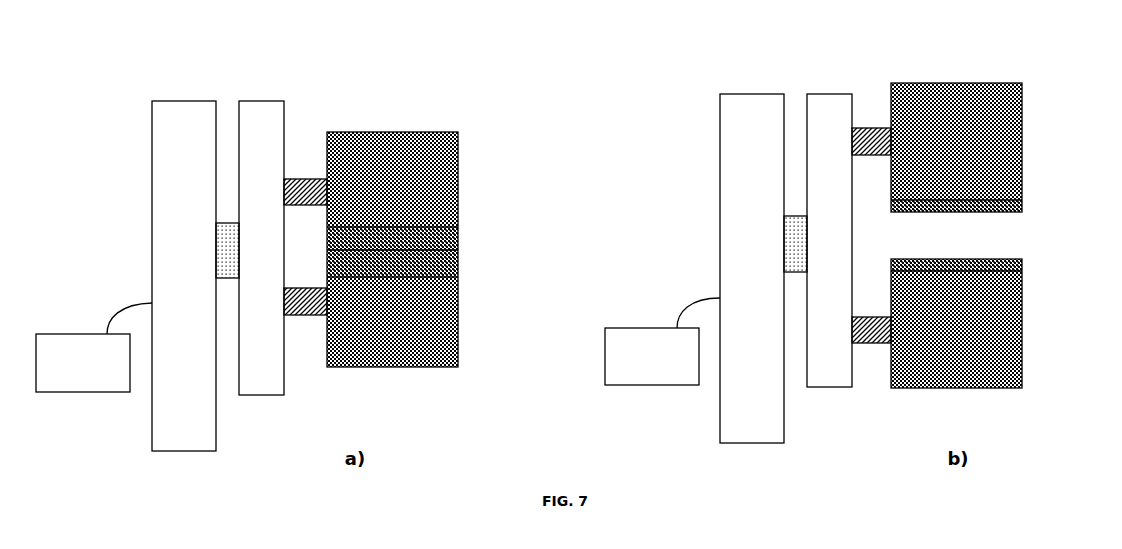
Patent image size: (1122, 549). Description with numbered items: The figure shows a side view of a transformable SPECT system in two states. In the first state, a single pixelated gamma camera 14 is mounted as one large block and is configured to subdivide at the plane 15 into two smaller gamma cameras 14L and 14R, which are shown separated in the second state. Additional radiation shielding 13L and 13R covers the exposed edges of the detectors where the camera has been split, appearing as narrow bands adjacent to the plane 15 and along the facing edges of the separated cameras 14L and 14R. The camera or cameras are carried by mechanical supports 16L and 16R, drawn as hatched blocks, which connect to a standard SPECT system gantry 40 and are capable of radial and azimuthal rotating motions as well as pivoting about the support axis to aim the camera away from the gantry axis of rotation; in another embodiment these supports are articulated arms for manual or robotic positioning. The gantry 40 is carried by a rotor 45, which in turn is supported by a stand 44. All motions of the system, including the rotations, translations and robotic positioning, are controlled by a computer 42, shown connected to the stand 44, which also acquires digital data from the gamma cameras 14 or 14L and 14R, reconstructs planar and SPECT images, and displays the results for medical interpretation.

The stand 44 is at (178, 120).
The gantry 40 is at (262, 118).
The rotor 45 is at (220, 225).
The computer 42 is at (66, 343).
The mechanical support 16L is at (299, 178).
The mechanical support 16R is at (303, 317).
The pixelated gamma camera 14 is at (436, 321).
The smaller gamma camera 14L is at (1003, 125).
The smaller gamma camera 14R is at (1003, 339).
The additional radiation shielding 13L is at (448, 237).
The additional radiation shielding 13R is at (448, 266).
The plane 15 is at (461, 251).